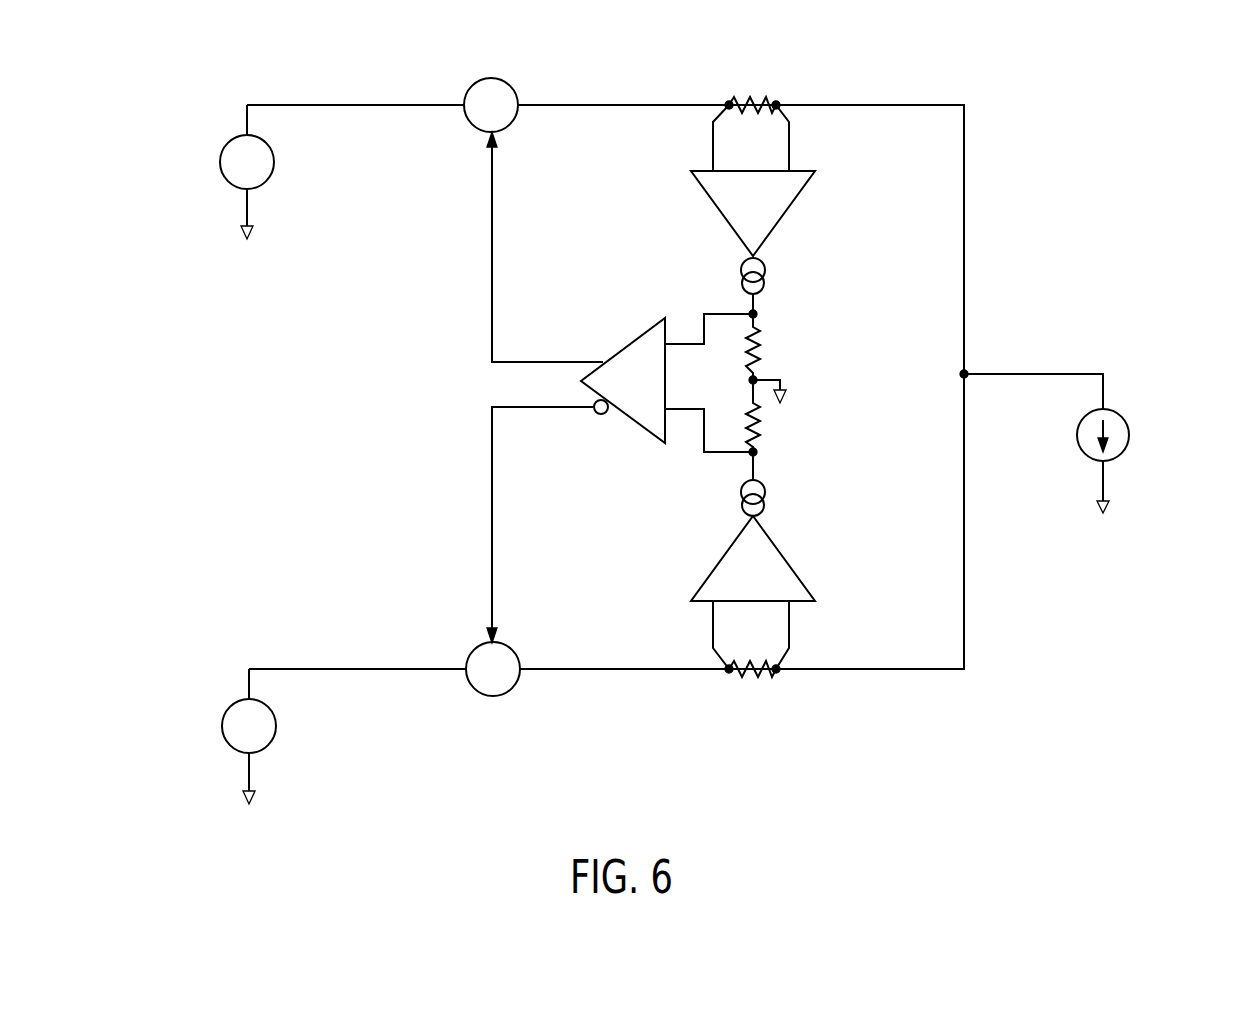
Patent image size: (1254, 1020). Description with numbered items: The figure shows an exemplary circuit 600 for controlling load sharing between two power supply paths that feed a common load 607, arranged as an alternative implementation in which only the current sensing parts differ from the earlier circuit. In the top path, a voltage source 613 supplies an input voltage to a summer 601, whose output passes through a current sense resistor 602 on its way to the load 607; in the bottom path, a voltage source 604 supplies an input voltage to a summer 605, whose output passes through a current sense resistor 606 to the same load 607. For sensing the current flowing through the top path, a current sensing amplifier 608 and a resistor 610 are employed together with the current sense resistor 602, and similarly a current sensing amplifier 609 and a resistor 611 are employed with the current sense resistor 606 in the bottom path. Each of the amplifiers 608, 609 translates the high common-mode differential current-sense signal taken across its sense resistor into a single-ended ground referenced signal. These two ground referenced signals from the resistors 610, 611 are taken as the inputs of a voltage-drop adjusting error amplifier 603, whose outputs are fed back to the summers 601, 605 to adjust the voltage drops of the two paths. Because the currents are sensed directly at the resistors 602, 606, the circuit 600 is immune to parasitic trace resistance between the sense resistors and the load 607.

The circuit 600 is at (1142, 100).
The summer 601 is at (464, 85).
The current sense resistor 602 is at (755, 72).
The voltage-drop adjusting error amplifier 603 is at (666, 382).
The voltage source 604 is at (222, 725).
The summer 605 is at (492, 698).
The current sense resistor 606 is at (759, 700).
The load 607 is at (1130, 437).
The current sensing amplifier 608 is at (785, 210).
The current sensing amplifier 609 is at (785, 553).
The resistor 610 is at (781, 346).
The resistor 611 is at (781, 423).
The voltage source 613 is at (220, 161).